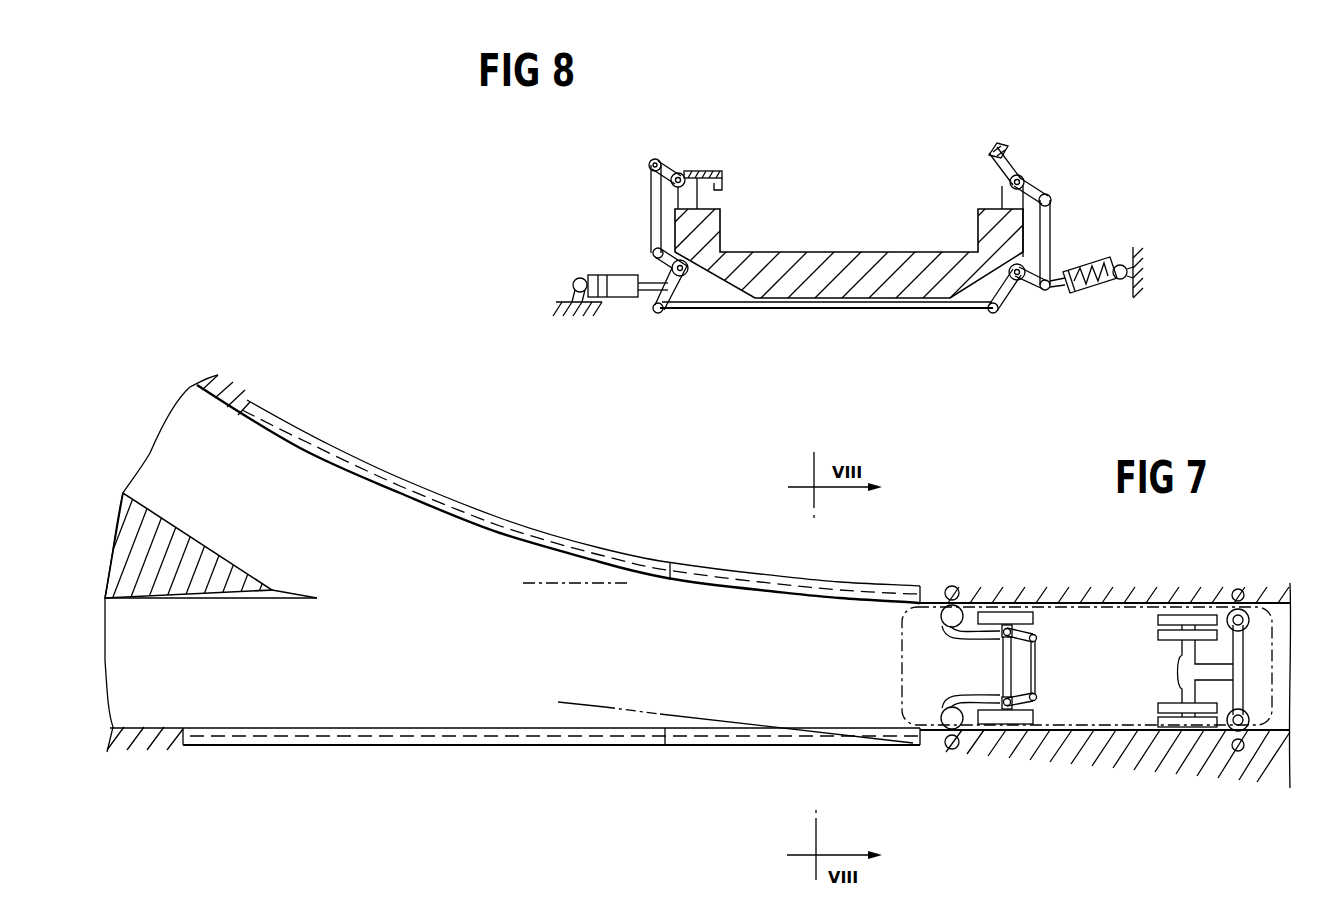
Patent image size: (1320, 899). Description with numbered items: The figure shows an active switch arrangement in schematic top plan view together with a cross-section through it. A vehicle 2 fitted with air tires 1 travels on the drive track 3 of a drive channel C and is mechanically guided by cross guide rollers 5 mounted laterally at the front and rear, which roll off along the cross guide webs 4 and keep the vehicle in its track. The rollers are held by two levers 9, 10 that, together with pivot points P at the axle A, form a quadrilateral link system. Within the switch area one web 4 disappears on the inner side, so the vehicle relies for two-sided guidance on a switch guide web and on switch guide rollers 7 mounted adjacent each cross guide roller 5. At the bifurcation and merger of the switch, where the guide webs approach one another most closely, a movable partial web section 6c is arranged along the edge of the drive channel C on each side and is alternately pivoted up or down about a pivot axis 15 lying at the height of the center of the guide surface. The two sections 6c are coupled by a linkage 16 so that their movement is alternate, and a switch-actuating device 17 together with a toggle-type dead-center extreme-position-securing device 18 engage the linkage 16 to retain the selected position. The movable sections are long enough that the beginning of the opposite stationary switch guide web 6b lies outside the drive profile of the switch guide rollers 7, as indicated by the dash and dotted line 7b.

In FIG. 7, the air tires 1 is at (997, 616).
In FIG. 7, the vehicle 2 is at (1123, 608).
In FIG. 8, the drive track 3 is at (859, 250).
In FIG. 8, the cross guide web 4 is at (722, 228).
In FIG. 7, the cross guide web 4 is at (1053, 610).
In FIG. 7, the cross guide roller 5 is at (940, 620).
In FIG. 7, the stationary switch guide web 6b is at (473, 540).
In FIG. 8, the movable partial web section 6c is at (725, 172).
In FIG. 7, the movable partial web section 6c is at (733, 592).
In FIG. 7, the switch guide roller 7 is at (955, 586).
In FIG. 7, the dash and dotted line 7b is at (625, 586).
In FIG. 7, the lever 9 is at (963, 648).
In FIG. 7, the lever 10 is at (972, 688).
In FIG. 8, the pivot axis 15 is at (678, 176).
In FIG. 8, the linkage 16 is at (668, 284).
In FIG. 8, the switch-actuating device 17 is at (628, 292).
In FIG. 8, the dead-center extreme-position-securing device 18 is at (1093, 290).
In FIG. 7, the pivot points P is at (1001, 656).
In FIG. 7, the axle A is at (1012, 672).
In FIG. 8, the drive channel C is at (835, 226).